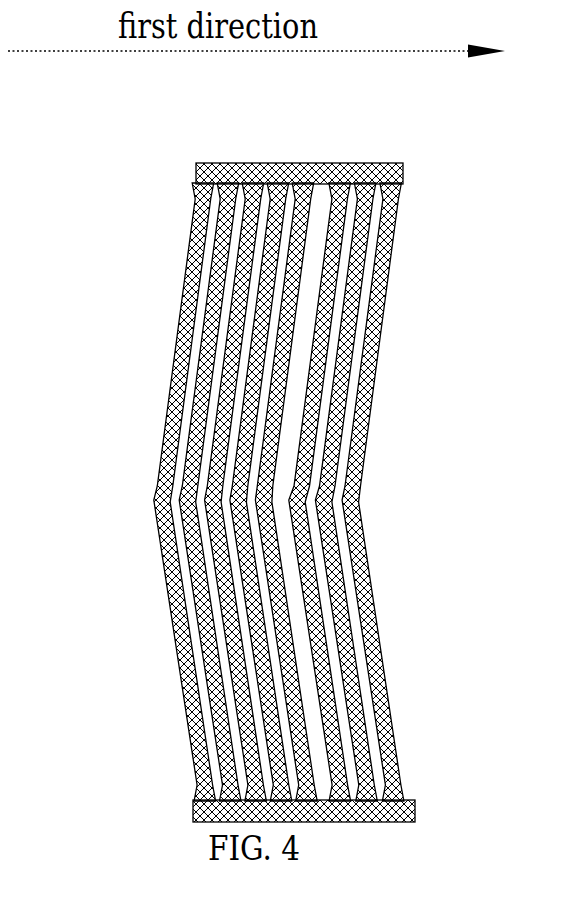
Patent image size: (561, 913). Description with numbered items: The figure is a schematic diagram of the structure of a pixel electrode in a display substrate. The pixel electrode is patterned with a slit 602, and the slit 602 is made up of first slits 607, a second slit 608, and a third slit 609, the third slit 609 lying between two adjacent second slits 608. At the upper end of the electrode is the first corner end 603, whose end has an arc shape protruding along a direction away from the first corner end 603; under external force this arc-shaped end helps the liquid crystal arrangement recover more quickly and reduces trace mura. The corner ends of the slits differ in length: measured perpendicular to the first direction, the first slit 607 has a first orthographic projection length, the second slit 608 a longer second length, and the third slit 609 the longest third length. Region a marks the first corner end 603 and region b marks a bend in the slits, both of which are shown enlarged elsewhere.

The slit 602 is at (129, 482).
The first corner end 603 is at (222, 165).
The first slit 607 is at (210, 297).
The second slit 608 is at (240, 371).
The third slit 609 is at (297, 432).
The partial enlarged region a is at (300, 185).
The partial enlarged region b is at (158, 490).